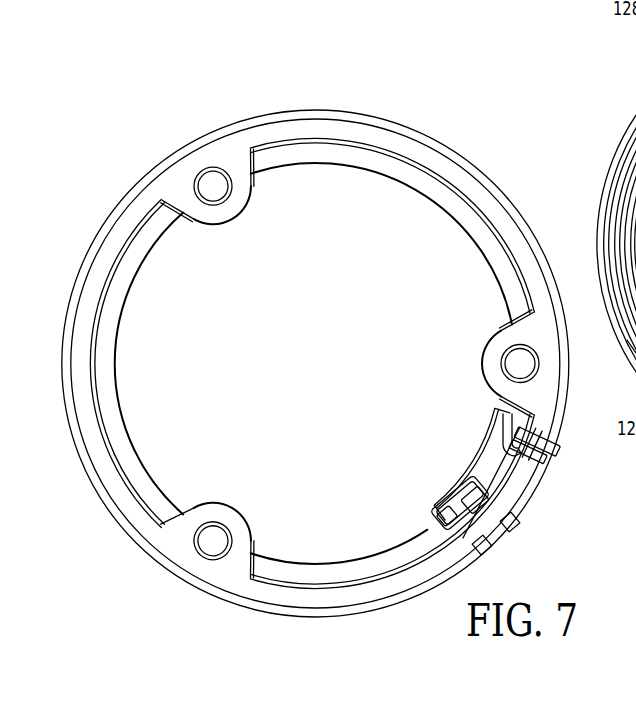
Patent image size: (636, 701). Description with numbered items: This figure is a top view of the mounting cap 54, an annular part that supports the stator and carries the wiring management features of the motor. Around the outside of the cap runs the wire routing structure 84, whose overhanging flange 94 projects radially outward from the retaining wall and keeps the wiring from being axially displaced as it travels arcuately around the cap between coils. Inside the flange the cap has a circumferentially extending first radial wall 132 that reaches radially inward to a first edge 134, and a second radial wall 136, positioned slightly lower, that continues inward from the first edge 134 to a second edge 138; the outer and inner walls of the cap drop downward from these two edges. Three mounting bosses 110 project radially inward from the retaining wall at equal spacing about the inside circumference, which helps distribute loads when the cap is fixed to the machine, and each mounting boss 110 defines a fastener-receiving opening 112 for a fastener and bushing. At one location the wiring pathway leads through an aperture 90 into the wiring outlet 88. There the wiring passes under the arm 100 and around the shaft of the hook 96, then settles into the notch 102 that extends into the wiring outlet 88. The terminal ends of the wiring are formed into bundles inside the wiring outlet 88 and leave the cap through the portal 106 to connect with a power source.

The mounting cap 54 is at (316, 91).
The wire routing structure 84 is at (440, 129).
The overhanging flange 94 is at (477, 172).
The wiring outlet 88 is at (466, 432).
The aperture 90 is at (517, 549).
The hook 96 is at (462, 469).
The arm 100 is at (477, 497).
The notch 102 is at (472, 543).
The portal 106 is at (546, 454).
The mounting boss 110 is at (232, 207).
The fastener-receiving opening 112 is at (236, 173).
The first radial wall 132 is at (135, 217).
The first edge 134 is at (128, 245).
The second radial wall 136 is at (137, 253).
The second edge 138 is at (130, 290).